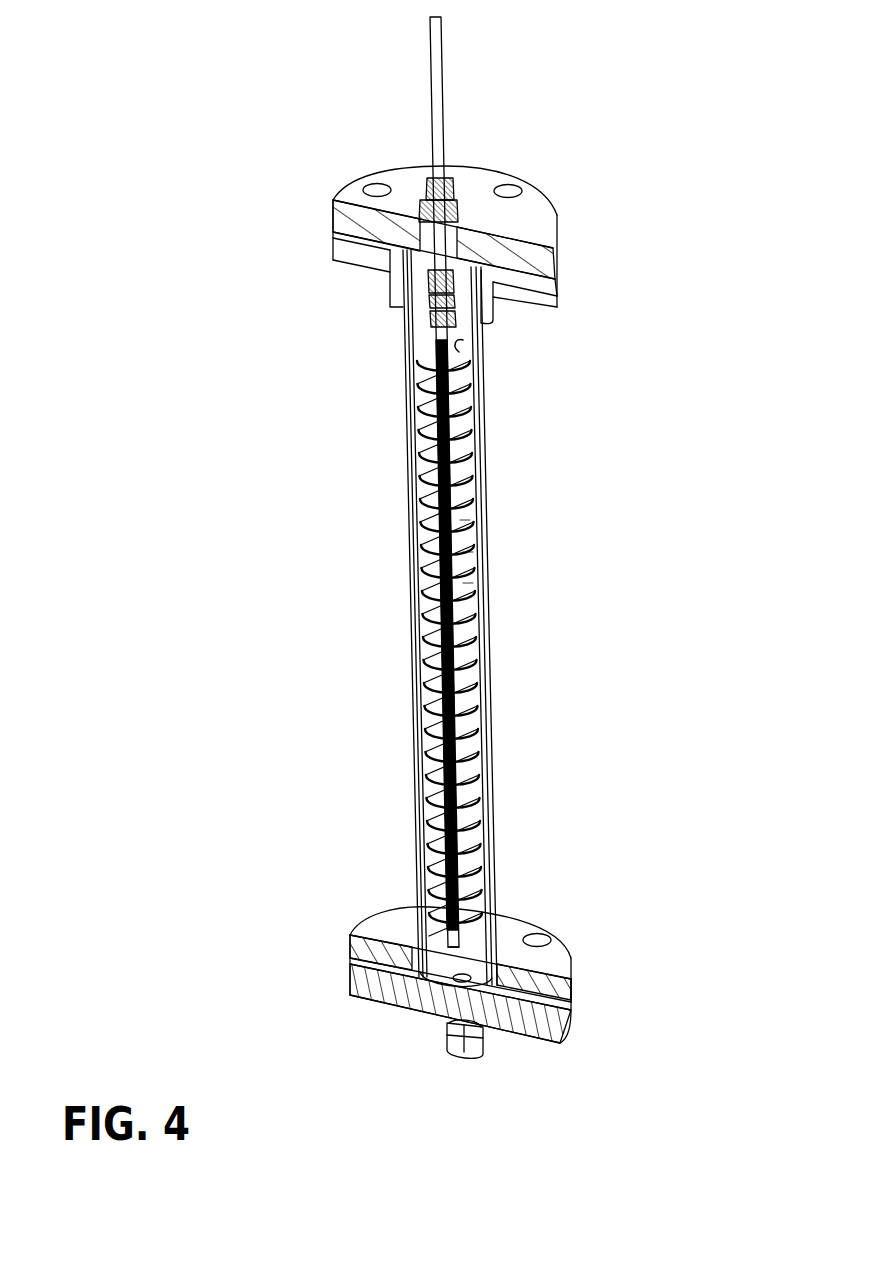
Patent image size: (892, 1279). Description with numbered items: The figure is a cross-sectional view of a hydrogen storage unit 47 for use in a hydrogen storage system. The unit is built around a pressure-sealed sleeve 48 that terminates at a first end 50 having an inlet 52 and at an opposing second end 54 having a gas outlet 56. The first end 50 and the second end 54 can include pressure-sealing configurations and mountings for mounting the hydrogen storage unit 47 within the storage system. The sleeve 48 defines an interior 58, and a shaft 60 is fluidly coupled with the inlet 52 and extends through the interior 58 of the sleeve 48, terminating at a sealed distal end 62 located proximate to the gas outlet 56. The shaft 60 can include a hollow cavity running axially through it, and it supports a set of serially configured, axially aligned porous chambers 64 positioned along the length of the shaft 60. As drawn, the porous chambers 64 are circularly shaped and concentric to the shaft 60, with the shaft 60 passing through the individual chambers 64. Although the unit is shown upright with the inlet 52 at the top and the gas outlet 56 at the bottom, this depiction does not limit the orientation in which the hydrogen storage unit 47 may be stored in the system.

The hydrogen storage unit 47 is at (444, 617).
The pressure-sealed sleeve 48 is at (484, 347).
The first end 50 is at (572, 278).
The inlet 52 is at (441, 55).
The second end 54 is at (588, 965).
The gas outlet 56 is at (465, 1068).
The interior 58 is at (460, 347).
The shaft 60 is at (447, 480).
The sealed distal end 62 is at (478, 935).
The porous chambers 64 is at (460, 520).